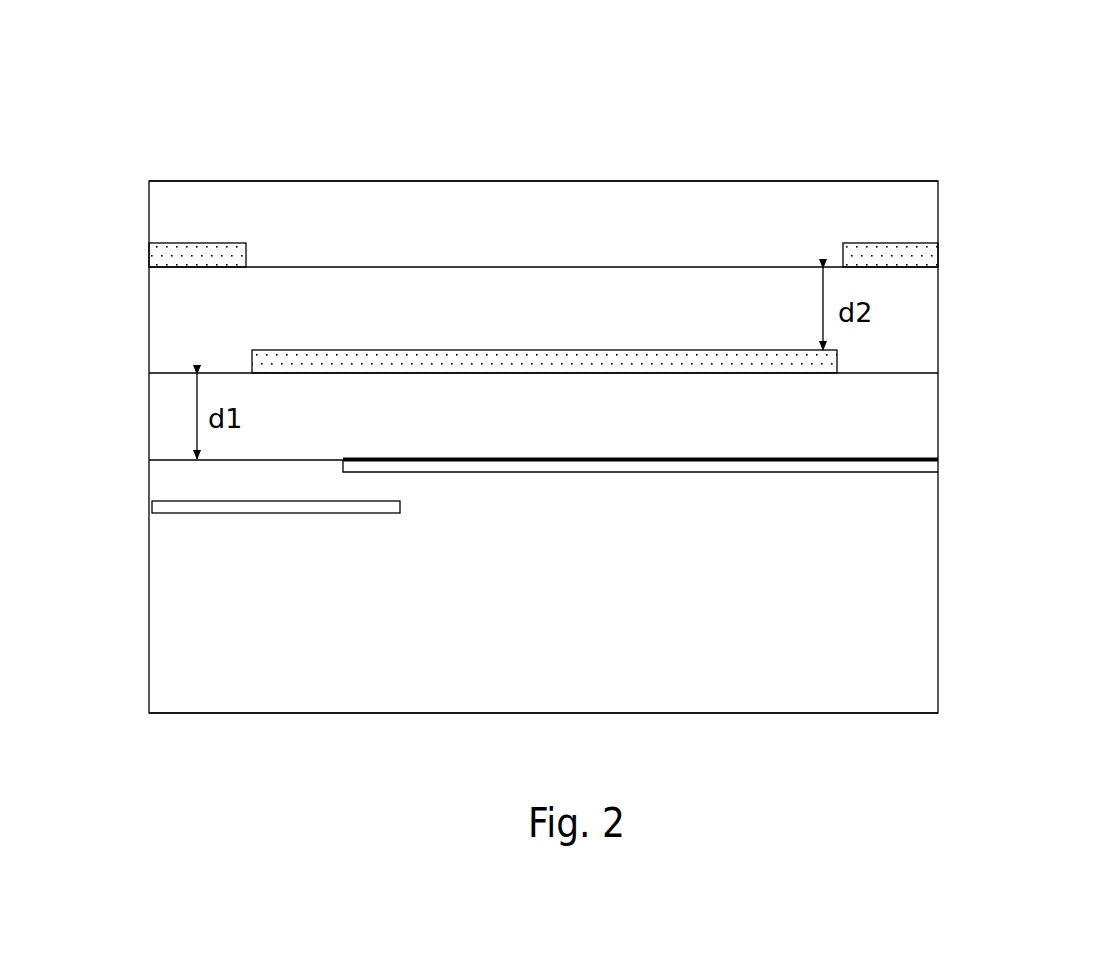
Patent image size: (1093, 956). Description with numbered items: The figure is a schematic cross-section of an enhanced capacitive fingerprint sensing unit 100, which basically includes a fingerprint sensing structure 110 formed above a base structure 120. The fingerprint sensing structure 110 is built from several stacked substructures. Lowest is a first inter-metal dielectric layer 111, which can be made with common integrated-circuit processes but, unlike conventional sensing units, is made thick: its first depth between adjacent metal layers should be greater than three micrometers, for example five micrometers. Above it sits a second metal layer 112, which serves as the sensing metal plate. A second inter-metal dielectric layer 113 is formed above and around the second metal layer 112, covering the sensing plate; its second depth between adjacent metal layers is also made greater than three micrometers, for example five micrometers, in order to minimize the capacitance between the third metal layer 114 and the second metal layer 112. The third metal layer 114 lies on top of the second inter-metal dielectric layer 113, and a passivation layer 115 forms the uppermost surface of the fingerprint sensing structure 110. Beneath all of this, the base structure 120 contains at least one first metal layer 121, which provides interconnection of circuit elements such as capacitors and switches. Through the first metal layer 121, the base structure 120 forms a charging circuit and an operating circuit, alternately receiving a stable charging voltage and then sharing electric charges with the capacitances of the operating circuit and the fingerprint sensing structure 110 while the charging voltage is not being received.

The enhanced capacitive fingerprint sensing unit 100 is at (1047, 82).
The fingerprint sensing structure 110 is at (140, 181).
The first inter-metal dielectric layer 111 is at (938, 427).
The second metal layer 112 is at (838, 366).
The second inter-metal dielectric layer 113 is at (938, 302).
The third metal layer 114 is at (938, 250).
The passivation layer 115 is at (938, 197).
The base structure 120 is at (140, 468).
The first metal layer 121 is at (938, 470).